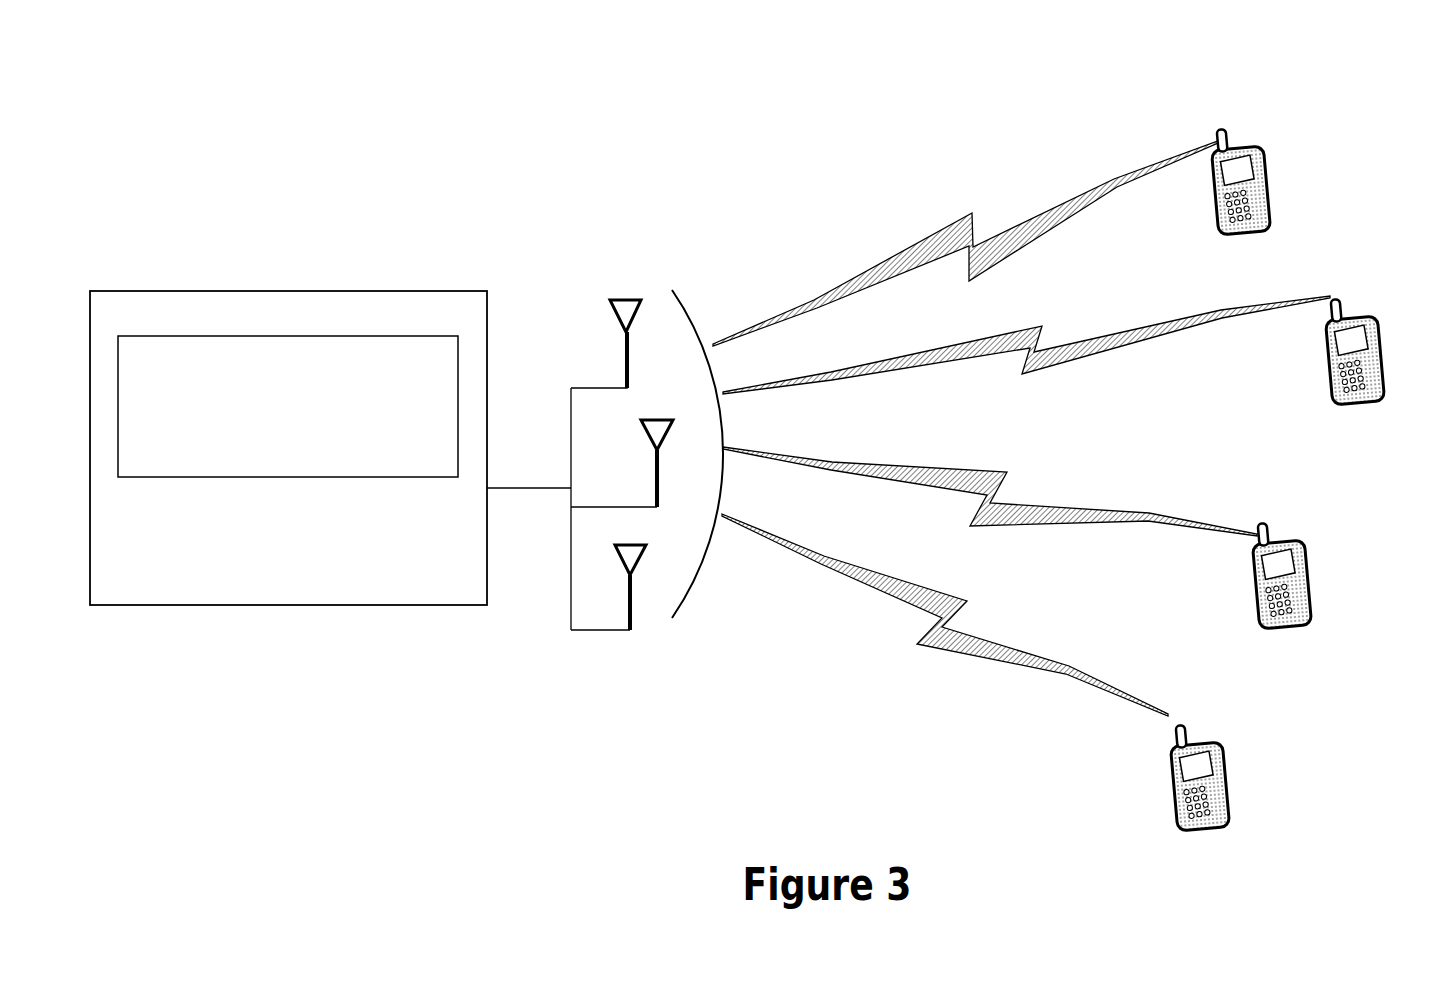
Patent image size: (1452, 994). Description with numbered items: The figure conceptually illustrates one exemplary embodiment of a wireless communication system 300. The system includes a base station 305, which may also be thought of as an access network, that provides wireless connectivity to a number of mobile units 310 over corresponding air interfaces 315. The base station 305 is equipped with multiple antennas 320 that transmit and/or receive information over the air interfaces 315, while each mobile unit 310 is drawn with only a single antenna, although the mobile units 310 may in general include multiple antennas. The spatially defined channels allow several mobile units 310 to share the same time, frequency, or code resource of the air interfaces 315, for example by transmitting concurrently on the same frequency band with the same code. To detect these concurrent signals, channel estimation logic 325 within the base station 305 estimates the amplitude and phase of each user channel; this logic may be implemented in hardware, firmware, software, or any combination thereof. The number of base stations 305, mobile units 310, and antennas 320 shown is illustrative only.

The wireless communication system 300 is at (288, 96).
The base station 305 is at (464, 574).
The mobile unit 310 is at (1267, 217).
The air interface 315 is at (940, 233).
The antenna 320 is at (627, 377).
The channel estimation logic 325 is at (270, 452).